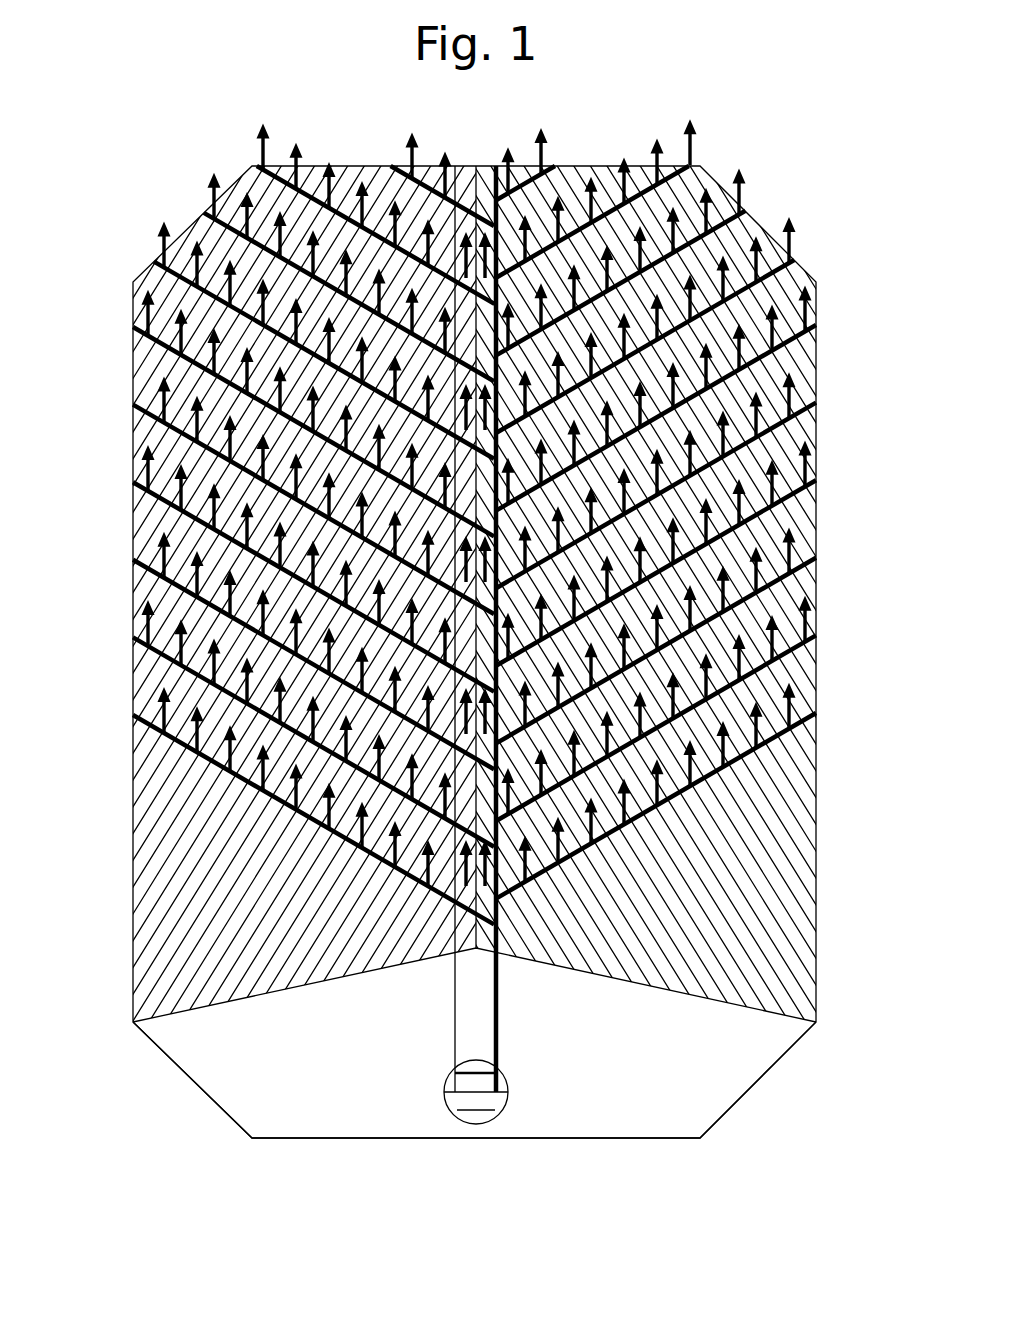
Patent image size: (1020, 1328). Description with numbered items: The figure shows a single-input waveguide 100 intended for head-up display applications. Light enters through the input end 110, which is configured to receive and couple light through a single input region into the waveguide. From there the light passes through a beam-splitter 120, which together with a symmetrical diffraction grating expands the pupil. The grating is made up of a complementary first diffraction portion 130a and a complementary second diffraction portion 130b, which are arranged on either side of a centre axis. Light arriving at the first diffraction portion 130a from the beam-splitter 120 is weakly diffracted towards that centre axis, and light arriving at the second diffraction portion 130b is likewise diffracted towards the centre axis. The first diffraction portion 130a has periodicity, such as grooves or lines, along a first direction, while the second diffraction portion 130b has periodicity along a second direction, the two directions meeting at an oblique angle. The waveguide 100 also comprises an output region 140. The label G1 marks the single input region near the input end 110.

The single-input waveguide 100 is at (510, 663).
The input end 110 is at (496, 703).
The beam-splitter 120 is at (683, 1077).
The first diffraction portion 130a is at (220, 822).
The second diffraction portion 130b is at (740, 845).
The output region 140 is at (132, 378).
The gas flow G1 is at (498, 1092).